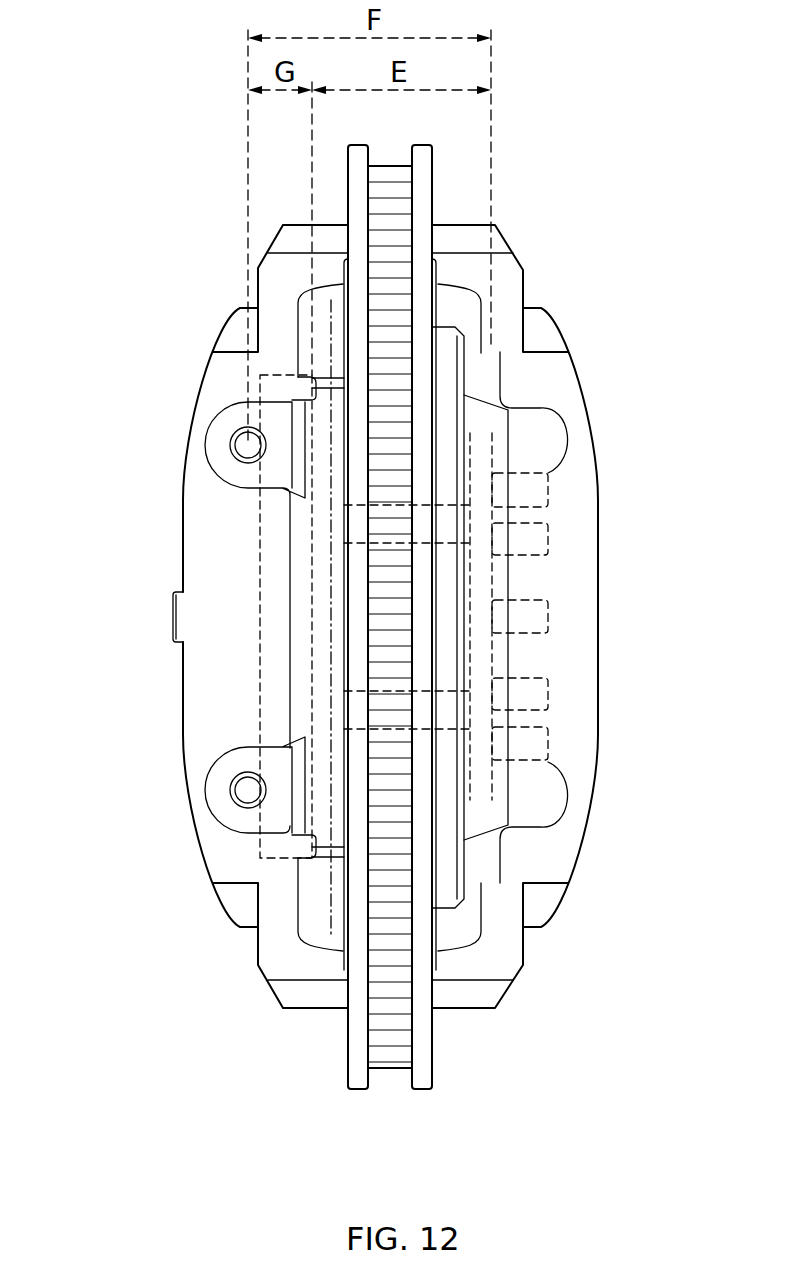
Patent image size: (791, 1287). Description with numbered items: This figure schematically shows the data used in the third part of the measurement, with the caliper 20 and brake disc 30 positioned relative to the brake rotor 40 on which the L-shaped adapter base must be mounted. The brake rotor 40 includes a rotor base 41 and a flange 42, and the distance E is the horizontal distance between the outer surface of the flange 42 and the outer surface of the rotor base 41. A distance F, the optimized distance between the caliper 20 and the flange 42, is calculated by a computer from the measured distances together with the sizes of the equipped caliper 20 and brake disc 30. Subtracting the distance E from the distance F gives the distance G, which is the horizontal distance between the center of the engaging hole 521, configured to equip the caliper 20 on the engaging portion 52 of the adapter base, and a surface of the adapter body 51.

The caliper 20 is at (210, 314).
The brake disc 30 is at (447, 180).
The brake rotor 40 is at (250, 662).
The rotor base 41 is at (272, 560).
The flange 42 is at (482, 575).
The adapter body 51 is at (323, 372).
The engaging portion 52 is at (255, 402).
The engaging hole 521 is at (247, 445).